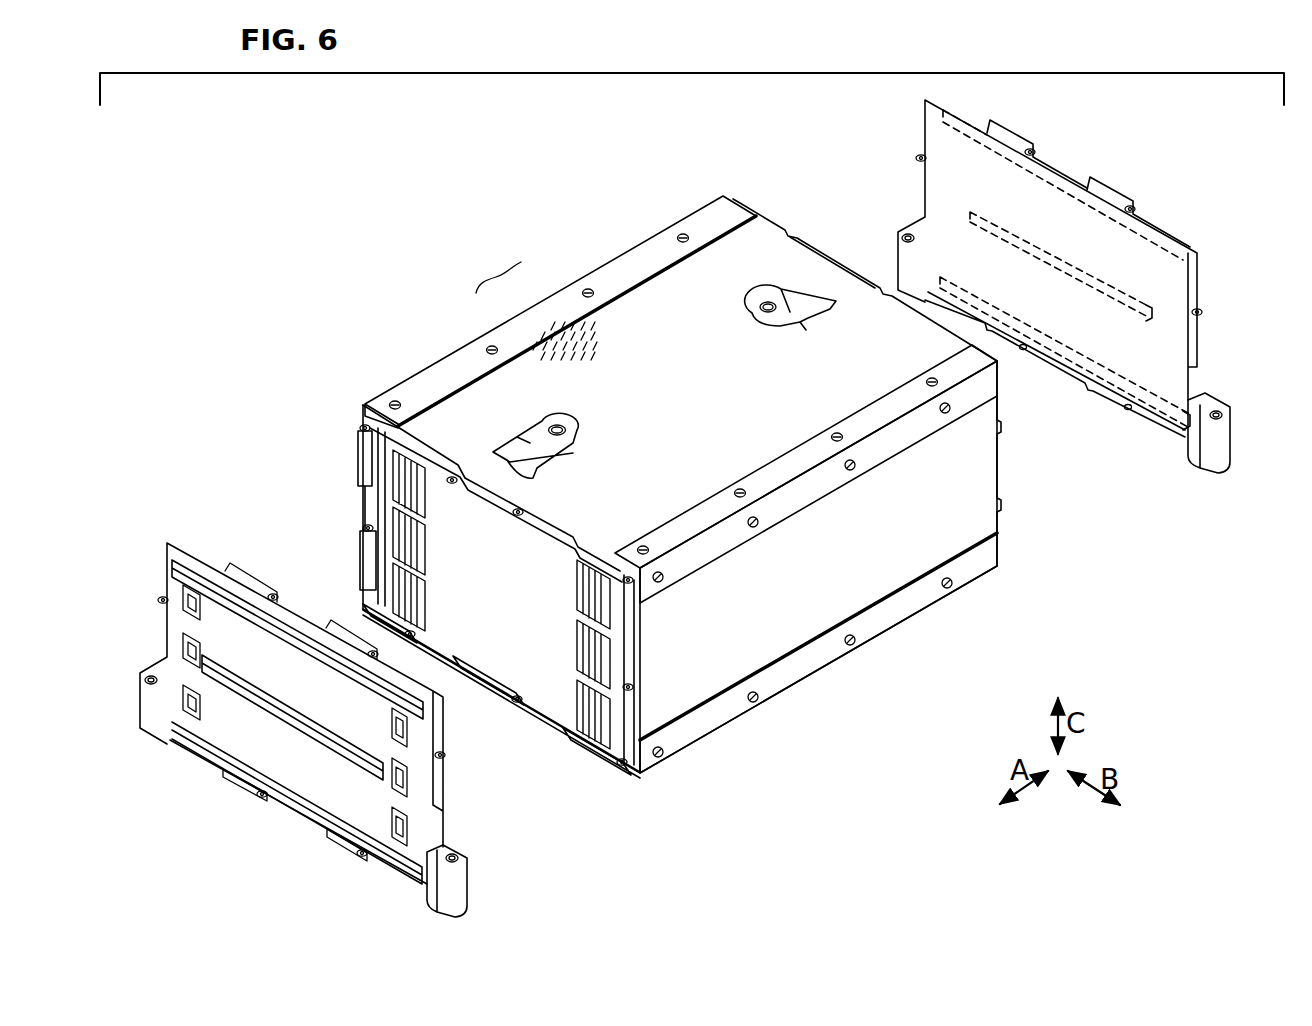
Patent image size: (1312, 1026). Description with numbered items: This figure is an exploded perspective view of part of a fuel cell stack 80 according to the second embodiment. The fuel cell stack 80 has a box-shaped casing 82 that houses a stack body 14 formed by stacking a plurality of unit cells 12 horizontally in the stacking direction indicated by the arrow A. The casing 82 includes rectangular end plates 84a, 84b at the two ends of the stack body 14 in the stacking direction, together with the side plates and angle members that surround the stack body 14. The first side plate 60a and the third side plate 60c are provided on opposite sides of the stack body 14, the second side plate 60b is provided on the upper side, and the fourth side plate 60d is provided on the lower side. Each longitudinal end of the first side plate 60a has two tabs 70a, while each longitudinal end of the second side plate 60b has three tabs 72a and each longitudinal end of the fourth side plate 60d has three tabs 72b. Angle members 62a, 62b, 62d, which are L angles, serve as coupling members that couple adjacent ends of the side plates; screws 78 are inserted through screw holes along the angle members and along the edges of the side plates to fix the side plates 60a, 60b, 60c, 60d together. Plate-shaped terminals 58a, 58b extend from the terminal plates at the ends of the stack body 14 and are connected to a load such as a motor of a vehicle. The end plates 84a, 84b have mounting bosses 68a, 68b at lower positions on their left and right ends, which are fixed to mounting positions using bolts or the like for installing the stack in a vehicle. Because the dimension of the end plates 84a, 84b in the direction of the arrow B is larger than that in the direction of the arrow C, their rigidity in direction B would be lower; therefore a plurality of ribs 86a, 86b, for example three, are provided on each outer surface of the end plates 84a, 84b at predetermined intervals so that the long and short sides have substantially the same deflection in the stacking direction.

The fuel cell stack 80 is at (346, 272).
The second side plate 60b is at (717, 257).
The casing 82 is at (455, 344).
The angle member 62b is at (637, 263).
The tab 72a is at (852, 283).
The terminal 58a is at (547, 440).
The terminal 58b is at (780, 300).
The stack body 14 is at (493, 268).
The unit cell 12 is at (572, 336).
The third side plate 60c is at (416, 411).
The tab 72b is at (498, 680).
The fourth side plate 60d is at (540, 684).
The tab 70a is at (637, 609).
The first side plate 60a is at (963, 467).
The angle member 62a is at (775, 480).
The angle member 62d is at (903, 604).
The screw 78 is at (588, 290).
The end plate 84a is at (164, 540).
The rib 86a is at (297, 705).
The mounting boss 68a is at (460, 891).
The end plate 84b is at (1206, 246).
The rib 86b is at (1087, 273).
The mounting boss 68b is at (1222, 445).